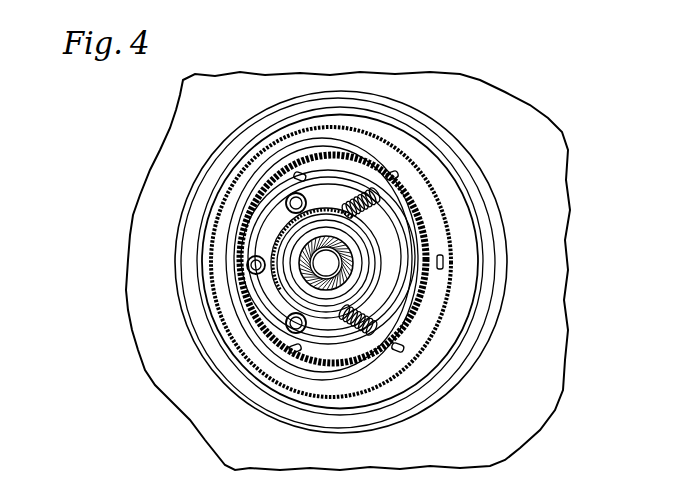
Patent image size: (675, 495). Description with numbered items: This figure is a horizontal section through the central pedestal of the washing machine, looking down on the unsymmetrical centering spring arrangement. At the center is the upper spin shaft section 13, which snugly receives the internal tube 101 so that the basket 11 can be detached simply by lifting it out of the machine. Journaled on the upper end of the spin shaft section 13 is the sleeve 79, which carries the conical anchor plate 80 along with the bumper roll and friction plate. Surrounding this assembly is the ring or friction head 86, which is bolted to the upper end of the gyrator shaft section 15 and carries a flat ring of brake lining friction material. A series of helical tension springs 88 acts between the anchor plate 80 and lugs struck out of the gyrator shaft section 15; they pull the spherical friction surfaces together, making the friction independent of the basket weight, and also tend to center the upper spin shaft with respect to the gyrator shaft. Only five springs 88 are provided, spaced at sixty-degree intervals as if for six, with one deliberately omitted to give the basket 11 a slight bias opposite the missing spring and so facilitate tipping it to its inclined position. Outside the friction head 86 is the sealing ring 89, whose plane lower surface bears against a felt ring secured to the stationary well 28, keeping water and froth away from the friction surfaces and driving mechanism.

The basket 11 is at (563, 306).
The upper spin shaft section 13 is at (360, 270).
The gyrator shaft section 15 is at (250, 318).
The well 28 is at (217, 215).
The sleeve 79 is at (360, 279).
The conical anchor plate 80 is at (373, 295).
The friction head 86 is at (427, 233).
The helical tension springs 88 is at (368, 206).
The sealing ring 89 is at (196, 231).
The internal tube 101 is at (347, 257).